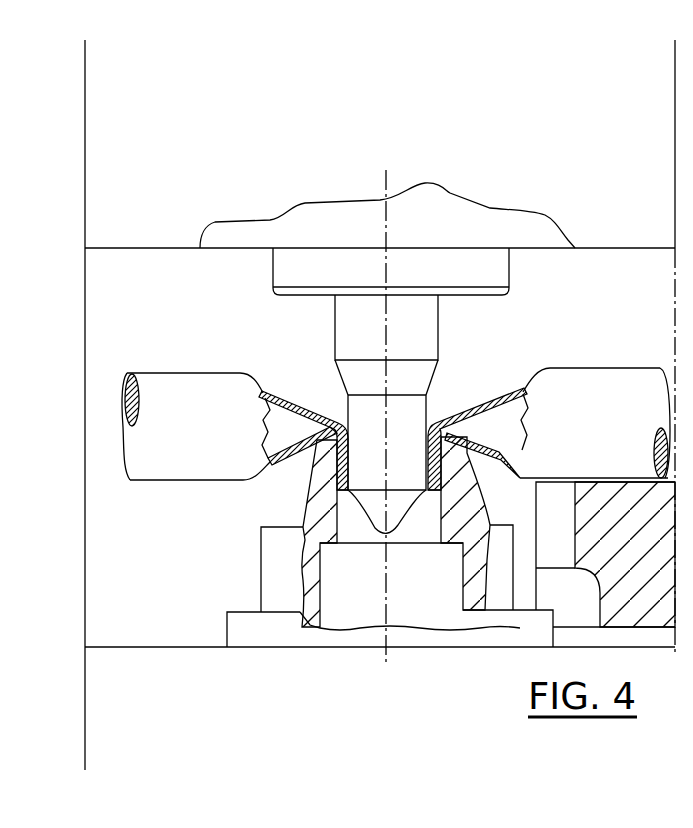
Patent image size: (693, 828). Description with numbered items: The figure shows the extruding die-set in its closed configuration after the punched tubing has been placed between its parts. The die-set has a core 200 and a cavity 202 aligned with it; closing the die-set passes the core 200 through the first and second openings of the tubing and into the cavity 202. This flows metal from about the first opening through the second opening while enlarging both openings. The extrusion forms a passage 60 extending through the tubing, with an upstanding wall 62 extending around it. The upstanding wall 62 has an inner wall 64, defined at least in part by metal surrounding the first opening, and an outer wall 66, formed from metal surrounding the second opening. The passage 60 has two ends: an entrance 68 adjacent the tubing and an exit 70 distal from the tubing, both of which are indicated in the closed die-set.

The core 200 is at (418, 327).
The cavity 202 is at (288, 502).
The passage 60 is at (367, 460).
The upstanding wall 62 is at (452, 455).
The inner wall 64 is at (348, 447).
The outer wall 66 is at (310, 442).
The entrance 68 is at (442, 408).
The exit 70 is at (433, 500).